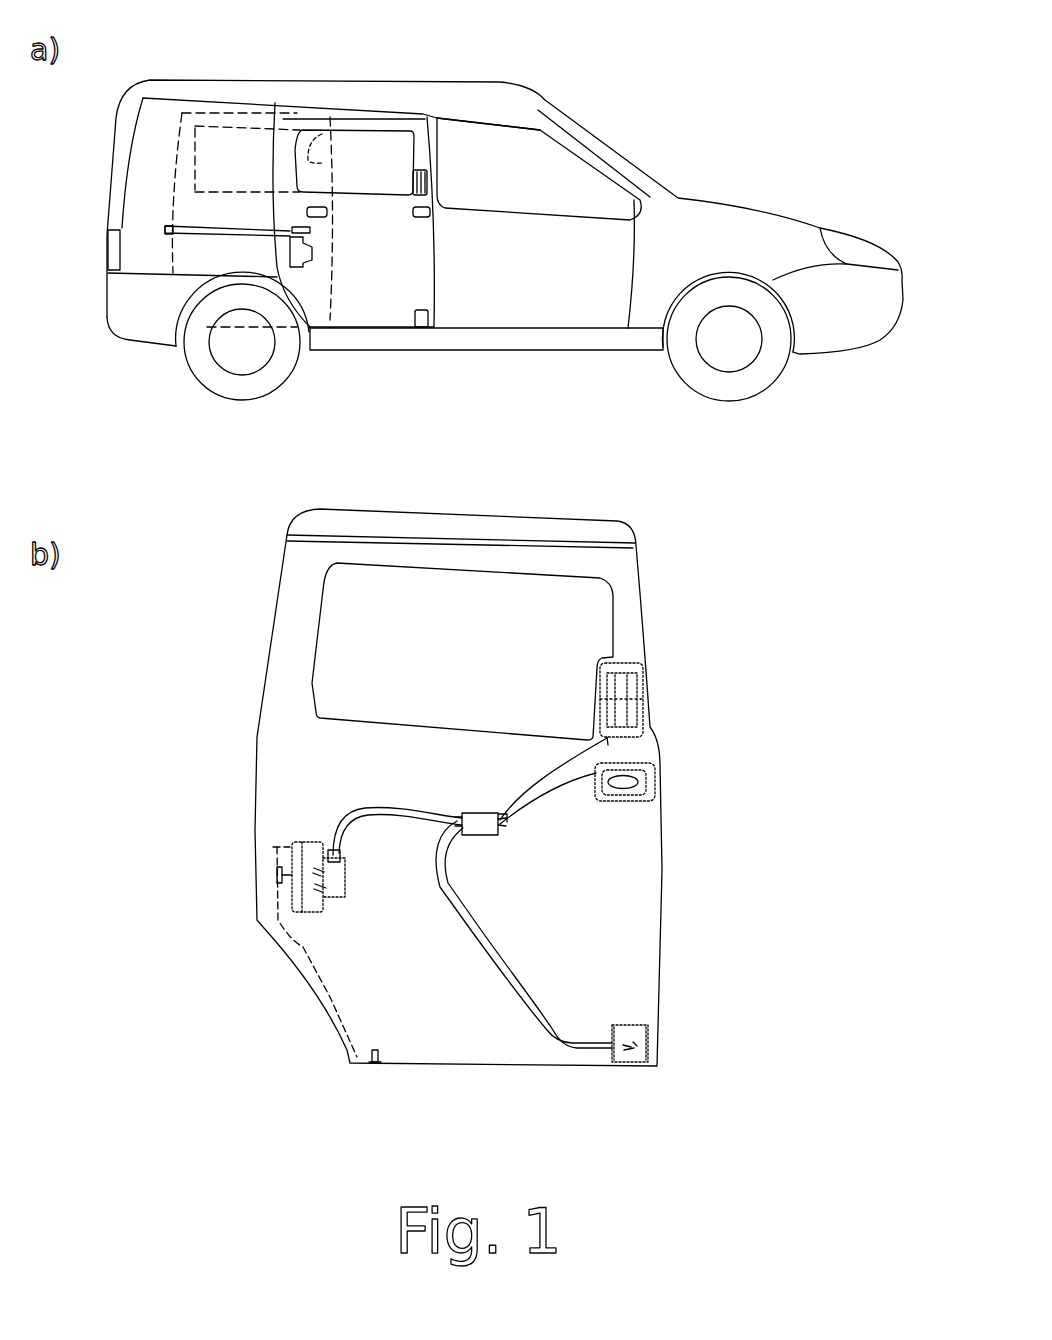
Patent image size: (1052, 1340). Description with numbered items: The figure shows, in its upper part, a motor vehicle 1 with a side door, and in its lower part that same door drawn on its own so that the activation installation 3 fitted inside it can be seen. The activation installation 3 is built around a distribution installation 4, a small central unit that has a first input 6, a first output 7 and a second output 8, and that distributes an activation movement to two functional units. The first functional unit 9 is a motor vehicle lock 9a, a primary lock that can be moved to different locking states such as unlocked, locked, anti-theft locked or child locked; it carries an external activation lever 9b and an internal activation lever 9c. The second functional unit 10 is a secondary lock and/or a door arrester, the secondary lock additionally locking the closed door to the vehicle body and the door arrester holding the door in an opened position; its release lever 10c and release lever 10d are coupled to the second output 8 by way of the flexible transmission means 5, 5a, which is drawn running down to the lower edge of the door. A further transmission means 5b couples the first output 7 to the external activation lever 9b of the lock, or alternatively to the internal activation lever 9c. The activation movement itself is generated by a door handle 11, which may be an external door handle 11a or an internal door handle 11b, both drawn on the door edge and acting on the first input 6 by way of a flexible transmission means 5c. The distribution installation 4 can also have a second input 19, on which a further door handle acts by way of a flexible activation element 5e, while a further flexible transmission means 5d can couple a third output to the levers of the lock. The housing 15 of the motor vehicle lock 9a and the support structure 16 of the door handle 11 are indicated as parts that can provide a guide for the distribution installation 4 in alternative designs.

The motor vehicle 1 is at (625, 85).
The activation installation 3 is at (713, 718).
The distribution installation 4 is at (487, 827).
The flexible transmission means 5 is at (490, 836).
The transmission means 5a is at (530, 1000).
The further transmission means 5b is at (417, 817).
The flexible transmission means 5c is at (570, 795).
The further flexible transmission means 5d is at (377, 810).
The flexible activation element 5e is at (533, 787).
The first input 6 is at (507, 827).
The first output 7 is at (462, 945).
The second output 8 is at (457, 837).
The first functional unit 9 is at (269, 838).
The motor vehicle lock 9a is at (313, 840).
The external activation lever 9b is at (337, 855).
The internal activation lever 9c is at (320, 890).
The second functional unit 10 is at (754, 1047).
The release lever 10c is at (632, 1050).
The release lever 10d is at (638, 1025).
The door handle 11 is at (713, 718).
The external door handle 11a is at (647, 773).
The internal door handle 11b is at (627, 687).
The housing 15 is at (303, 913).
The support structure 16 is at (647, 723).
The second input 19 is at (507, 823).